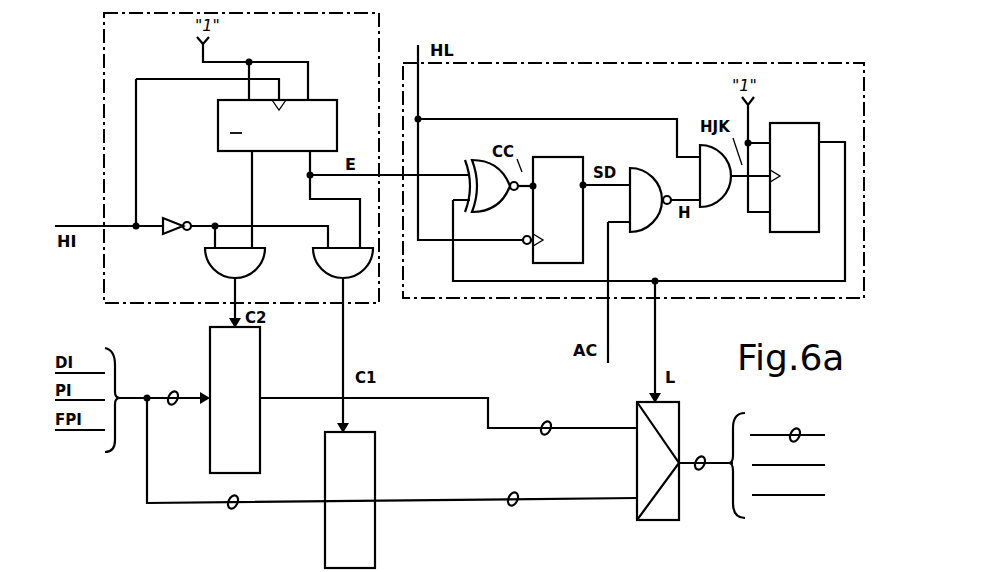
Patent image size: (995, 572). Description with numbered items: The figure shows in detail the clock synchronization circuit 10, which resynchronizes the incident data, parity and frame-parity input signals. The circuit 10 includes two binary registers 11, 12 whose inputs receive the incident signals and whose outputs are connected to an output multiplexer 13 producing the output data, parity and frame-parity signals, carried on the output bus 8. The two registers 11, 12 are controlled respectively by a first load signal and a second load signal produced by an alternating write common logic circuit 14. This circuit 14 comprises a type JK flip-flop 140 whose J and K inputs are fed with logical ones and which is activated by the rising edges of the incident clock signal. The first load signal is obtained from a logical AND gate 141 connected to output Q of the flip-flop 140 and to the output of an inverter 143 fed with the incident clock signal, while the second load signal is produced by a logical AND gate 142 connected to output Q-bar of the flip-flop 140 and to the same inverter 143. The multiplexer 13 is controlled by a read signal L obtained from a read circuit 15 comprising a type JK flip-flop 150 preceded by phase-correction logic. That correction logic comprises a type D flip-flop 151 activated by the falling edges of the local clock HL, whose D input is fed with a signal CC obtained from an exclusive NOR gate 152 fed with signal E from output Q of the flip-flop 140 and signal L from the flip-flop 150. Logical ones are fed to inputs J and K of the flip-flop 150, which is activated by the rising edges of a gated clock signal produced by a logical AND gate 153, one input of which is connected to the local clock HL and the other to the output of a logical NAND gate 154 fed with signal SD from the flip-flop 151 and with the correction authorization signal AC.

The output data bus 8 is at (752, 461).
The clock synchronization circuit 10 is at (377, 452).
The binary register 11 is at (377, 458).
The binary register 12 is at (212, 461).
The output multiplexer 13 is at (663, 521).
The alternating write common logic circuit 14 is at (104, 164).
The read circuit 15 is at (432, 300).
The JK flip-flop 140 is at (320, 99).
The AND gate 141 is at (330, 269).
The AND gate 142 is at (218, 269).
The inverter 143 is at (168, 216).
The JK flip-flop 150 is at (798, 233).
The D flip-flop 151 is at (549, 162).
The exclusive NOR gate 152 is at (494, 198).
The AND gate 153 is at (718, 195).
The NAND gate 154 is at (645, 225).